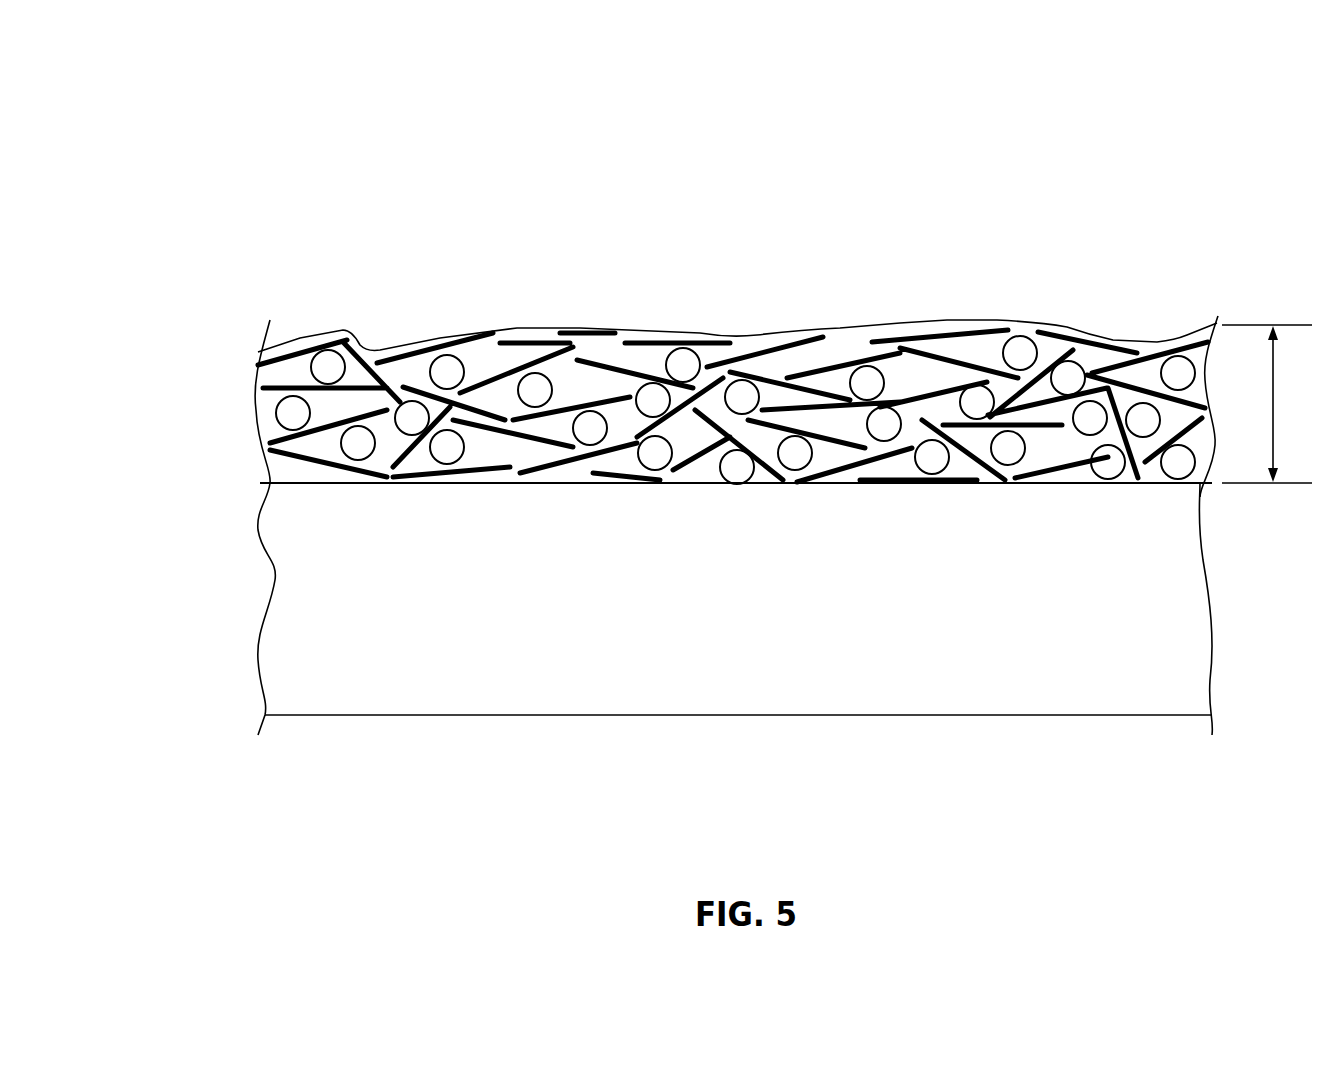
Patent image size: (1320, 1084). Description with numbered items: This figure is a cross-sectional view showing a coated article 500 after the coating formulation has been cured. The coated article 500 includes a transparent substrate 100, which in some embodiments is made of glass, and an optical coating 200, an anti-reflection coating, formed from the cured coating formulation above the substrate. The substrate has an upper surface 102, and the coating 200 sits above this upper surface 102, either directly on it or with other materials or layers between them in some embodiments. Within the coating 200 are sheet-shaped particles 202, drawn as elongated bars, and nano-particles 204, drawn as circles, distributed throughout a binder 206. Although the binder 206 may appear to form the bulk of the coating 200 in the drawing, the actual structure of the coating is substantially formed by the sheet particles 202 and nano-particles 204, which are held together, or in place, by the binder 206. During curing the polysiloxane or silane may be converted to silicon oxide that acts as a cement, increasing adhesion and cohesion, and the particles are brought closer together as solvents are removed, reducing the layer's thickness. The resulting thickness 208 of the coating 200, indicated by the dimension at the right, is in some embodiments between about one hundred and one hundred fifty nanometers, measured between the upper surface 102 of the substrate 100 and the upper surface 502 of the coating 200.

The coated article 500 is at (1037, 190).
The upper surface of the coating 502 is at (700, 329).
The optical coating 200 is at (233, 331).
The sheet-shaped particles 202 is at (422, 347).
The nano-particles 204 is at (535, 388).
The binder 206 is at (857, 346).
The thickness 208 is at (1267, 404).
The transparent substrate 100 is at (513, 677).
The upper surface 102 is at (284, 487).